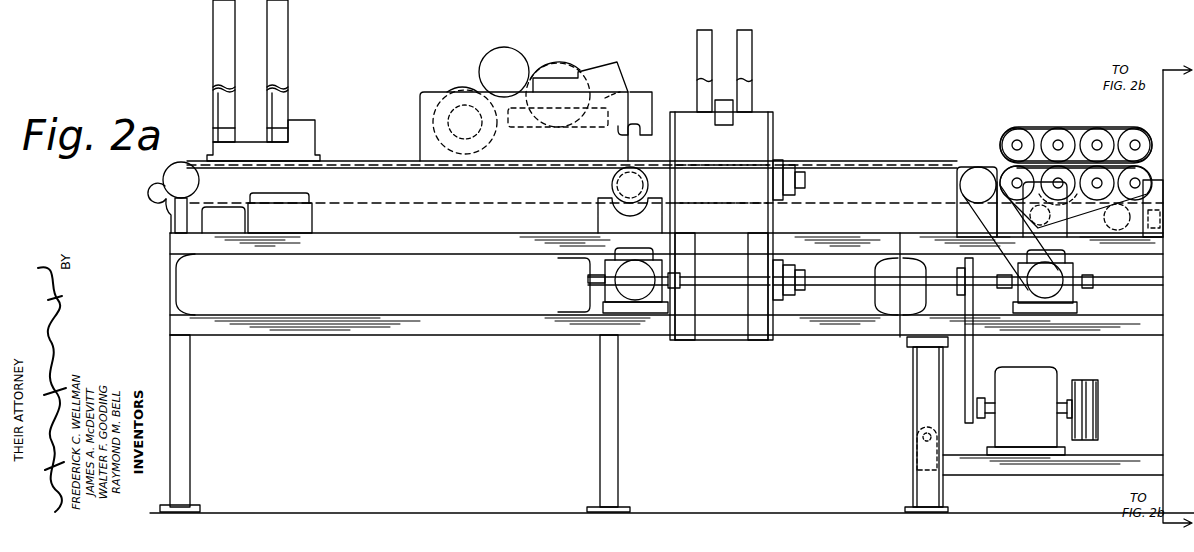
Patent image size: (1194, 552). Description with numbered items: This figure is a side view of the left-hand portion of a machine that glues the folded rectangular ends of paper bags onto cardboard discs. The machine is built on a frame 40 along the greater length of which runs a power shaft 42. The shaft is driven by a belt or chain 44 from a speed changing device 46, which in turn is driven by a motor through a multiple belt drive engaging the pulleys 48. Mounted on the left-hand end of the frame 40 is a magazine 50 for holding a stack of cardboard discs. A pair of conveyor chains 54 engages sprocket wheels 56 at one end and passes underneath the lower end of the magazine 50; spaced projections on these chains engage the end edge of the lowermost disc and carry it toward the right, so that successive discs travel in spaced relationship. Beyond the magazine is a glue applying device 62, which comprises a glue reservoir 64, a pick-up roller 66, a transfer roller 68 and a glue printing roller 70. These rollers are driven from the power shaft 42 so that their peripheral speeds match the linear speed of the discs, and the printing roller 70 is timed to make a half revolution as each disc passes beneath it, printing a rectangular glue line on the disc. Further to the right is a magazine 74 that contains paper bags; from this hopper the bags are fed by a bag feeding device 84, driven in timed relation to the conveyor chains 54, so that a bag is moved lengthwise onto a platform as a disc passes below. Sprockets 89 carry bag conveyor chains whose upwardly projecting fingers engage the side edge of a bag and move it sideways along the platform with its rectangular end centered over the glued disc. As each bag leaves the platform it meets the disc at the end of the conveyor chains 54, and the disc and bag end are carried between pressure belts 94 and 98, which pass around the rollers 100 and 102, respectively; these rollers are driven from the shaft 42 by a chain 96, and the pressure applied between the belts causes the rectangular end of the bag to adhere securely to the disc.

The frame 40 is at (455, 322).
The power shaft 42 is at (854, 285).
The belt or chain 44 is at (974, 357).
The speed changing device 46 is at (1048, 376).
The pulleys 48 is at (1098, 413).
The magazine 50 is at (288, 34).
The conveyor chains 54 is at (420, 203).
The sprocket wheels 56 is at (165, 171).
The glue applying device 62 is at (416, 76).
The glue reservoir 64 is at (630, 92).
The pick-up roller 66 is at (566, 64).
The transfer roller 68 is at (506, 48).
The glue printing roller 70 is at (453, 91).
The magazine 74 is at (752, 52).
The bag feeding device 84 is at (773, 140).
The sprockets 89 is at (972, 171).
The pressure belt 94 is at (1083, 136).
The chain 96 is at (1004, 260).
The pressure belt 98 is at (1072, 222).
The rollers 100 is at (1012, 137).
The rollers 102 is at (1150, 170).